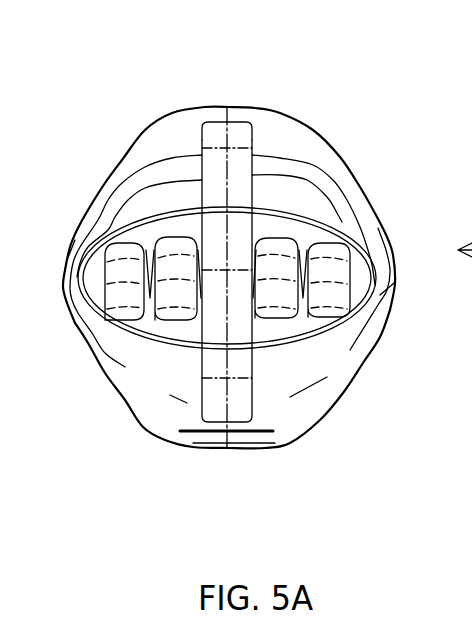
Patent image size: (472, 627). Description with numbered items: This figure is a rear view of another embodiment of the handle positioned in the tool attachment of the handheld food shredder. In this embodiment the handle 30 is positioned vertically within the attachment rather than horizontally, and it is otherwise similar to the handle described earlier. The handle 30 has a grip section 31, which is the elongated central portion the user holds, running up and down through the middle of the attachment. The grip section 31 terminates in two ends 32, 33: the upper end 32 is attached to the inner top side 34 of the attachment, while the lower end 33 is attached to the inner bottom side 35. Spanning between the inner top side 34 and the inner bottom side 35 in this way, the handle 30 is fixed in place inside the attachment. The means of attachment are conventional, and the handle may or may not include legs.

The handle 30 is at (212, 128).
The grip section 31 is at (217, 312).
The end 32 is at (243, 133).
The end 33 is at (229, 422).
The inner top side 34 is at (118, 162).
The inner bottom side 35 is at (143, 427).